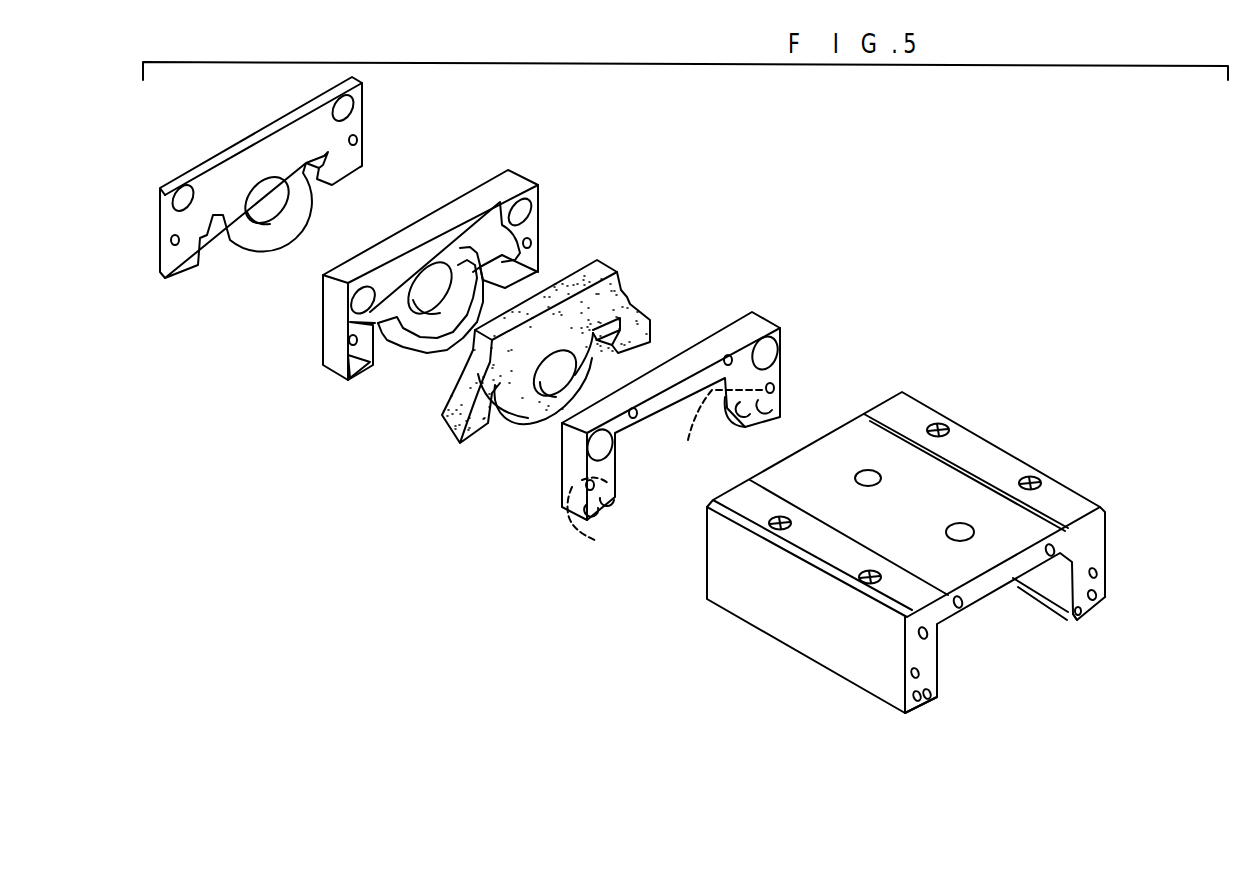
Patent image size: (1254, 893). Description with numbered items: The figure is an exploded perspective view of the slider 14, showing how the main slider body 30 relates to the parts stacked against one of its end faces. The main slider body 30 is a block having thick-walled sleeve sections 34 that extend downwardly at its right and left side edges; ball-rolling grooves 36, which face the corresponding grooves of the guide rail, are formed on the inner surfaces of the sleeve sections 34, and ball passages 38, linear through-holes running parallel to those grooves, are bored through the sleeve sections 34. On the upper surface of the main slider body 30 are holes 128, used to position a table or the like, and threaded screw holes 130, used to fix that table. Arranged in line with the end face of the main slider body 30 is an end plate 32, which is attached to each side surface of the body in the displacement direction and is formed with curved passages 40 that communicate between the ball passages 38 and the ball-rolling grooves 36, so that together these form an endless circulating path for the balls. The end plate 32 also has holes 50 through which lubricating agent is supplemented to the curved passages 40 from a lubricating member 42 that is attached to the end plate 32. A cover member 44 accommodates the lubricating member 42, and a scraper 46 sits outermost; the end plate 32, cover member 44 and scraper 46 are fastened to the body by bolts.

The slider 14 is at (930, 557).
The main slider body 30 is at (930, 557).
The end plate 32 is at (696, 402).
The sleeve section 34 is at (1098, 612).
The ball-rolling groove 36 is at (1058, 620).
The ball passage 38 is at (1093, 595).
The curved passage 40 is at (698, 469).
The lubricating member 42 is at (605, 262).
The cover member 44 is at (520, 175).
The scraper 46 is at (363, 77).
The hole 50 is at (742, 415).
The hole 128 is at (865, 480).
The threaded screw hole 130 is at (938, 423).